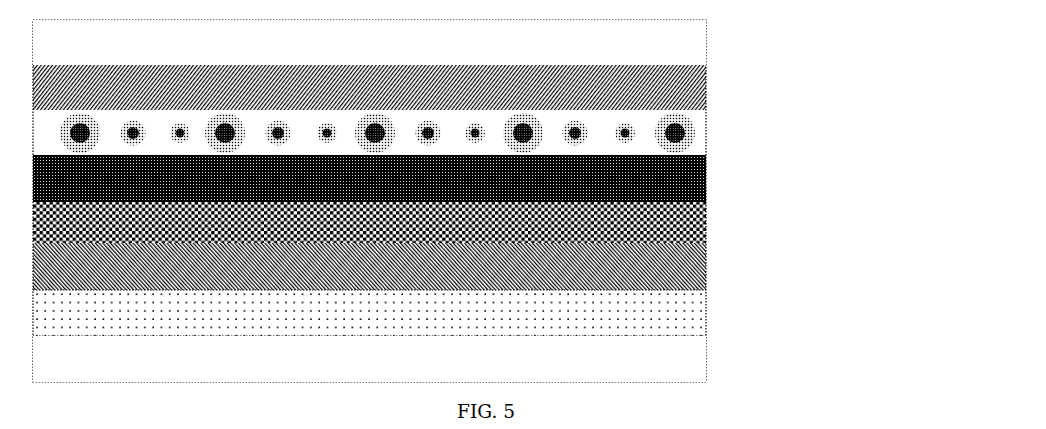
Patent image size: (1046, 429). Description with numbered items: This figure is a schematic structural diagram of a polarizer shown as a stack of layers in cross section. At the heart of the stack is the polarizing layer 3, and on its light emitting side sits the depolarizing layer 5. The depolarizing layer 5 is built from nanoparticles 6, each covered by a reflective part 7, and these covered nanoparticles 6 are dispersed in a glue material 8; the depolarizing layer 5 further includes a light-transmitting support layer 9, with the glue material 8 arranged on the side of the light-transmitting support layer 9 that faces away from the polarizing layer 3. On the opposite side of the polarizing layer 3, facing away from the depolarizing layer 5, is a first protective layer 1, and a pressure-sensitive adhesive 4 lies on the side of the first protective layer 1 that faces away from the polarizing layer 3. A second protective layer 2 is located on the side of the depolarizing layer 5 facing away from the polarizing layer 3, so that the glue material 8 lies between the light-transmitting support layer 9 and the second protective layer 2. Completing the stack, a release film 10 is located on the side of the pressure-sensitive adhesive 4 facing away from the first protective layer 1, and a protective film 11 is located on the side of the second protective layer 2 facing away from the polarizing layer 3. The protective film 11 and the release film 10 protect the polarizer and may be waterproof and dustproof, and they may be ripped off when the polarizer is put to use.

The first protective layer 1 is at (706, 268).
The second protective layer 2 is at (706, 88).
The polarizing layer 3 is at (706, 222).
The pressure-sensitive adhesive 4 is at (706, 313).
The depolarizing layer 5 is at (788, 110).
The nanoparticles 6 is at (690, 135).
The reflective part 7 is at (688, 118).
The glue material 8 is at (706, 154).
The light-transmitting support layer 9 is at (706, 188).
The release film 10 is at (706, 360).
The protective film 11 is at (692, 43).